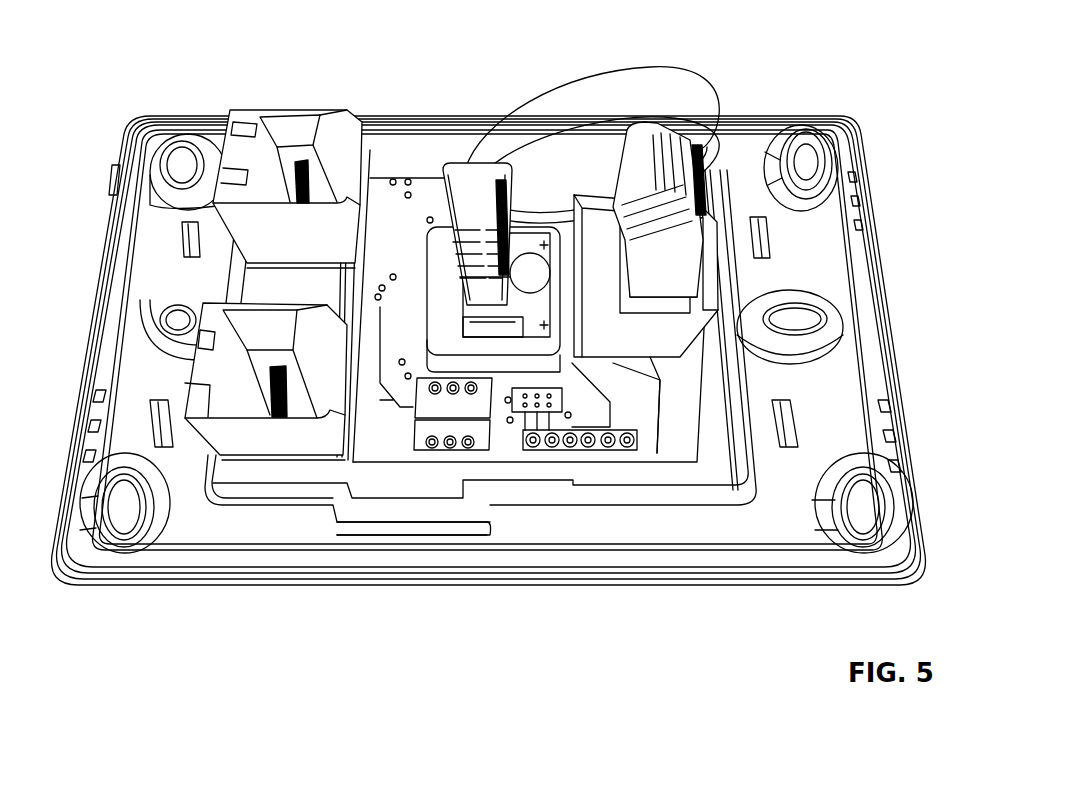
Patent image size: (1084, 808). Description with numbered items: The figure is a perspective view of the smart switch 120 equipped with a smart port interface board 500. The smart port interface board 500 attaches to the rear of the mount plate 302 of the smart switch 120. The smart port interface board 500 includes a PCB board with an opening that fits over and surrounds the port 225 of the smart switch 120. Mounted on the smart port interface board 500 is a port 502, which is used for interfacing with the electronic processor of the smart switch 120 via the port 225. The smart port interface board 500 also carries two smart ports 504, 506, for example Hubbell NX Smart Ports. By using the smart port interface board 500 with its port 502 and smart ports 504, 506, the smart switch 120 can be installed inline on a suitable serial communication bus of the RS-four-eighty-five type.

The smart switch 120 is at (300, 495).
The port 225 is at (497, 378).
The mount plate 302 is at (804, 130).
The smart port interface board 500 is at (393, 168).
The port 502 is at (724, 298).
The smart port 504 is at (232, 110).
The smart port 506 is at (195, 300).